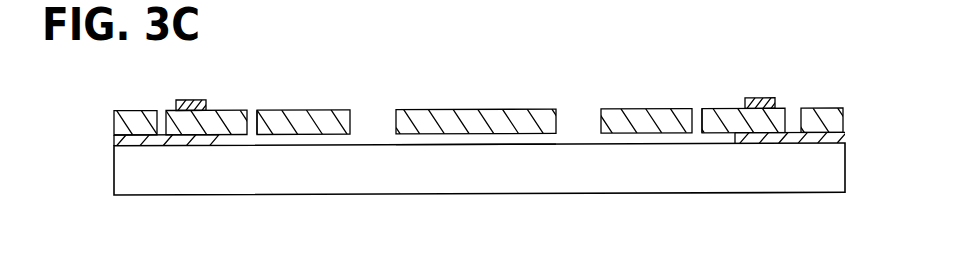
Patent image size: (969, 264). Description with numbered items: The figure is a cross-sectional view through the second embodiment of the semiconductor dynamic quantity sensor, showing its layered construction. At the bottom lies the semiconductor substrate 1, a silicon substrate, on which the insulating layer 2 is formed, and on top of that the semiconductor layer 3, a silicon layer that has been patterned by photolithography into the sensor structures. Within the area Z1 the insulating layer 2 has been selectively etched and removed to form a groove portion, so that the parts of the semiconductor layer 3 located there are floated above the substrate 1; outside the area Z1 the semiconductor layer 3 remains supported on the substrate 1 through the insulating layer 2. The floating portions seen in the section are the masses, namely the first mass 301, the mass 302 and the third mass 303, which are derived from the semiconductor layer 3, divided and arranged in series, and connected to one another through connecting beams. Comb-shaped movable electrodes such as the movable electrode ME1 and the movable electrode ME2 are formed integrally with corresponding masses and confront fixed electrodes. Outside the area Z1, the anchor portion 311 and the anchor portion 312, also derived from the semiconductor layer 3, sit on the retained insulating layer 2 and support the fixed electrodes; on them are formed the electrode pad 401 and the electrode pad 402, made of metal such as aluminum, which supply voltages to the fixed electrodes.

The semiconductor substrate 1 is at (113, 168).
The insulating layer 2 is at (113, 143).
The semiconductor layer 3 is at (106, 117).
The first mass 301 is at (609, 109).
The mass 302 is at (474, 109).
The third mass 303 is at (339, 110).
The anchor portion 311 is at (707, 109).
The anchor portion 312 is at (225, 110).
The electrode pad 401 is at (752, 98).
The electrode pad 402 is at (177, 98).
The movable electrode ME1 is at (677, 99).
The movable electrode ME2 is at (268, 100).
The area Z1 is at (435, 144).